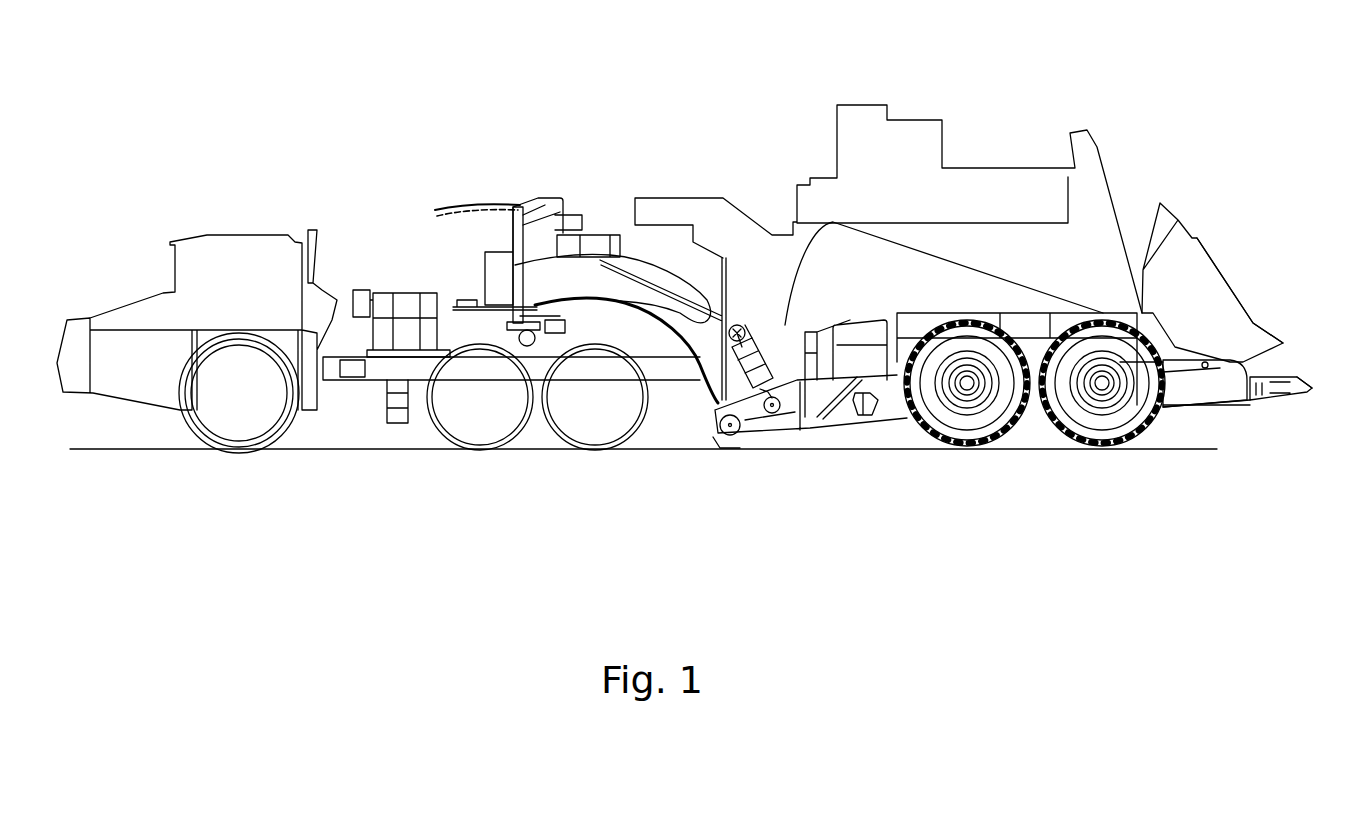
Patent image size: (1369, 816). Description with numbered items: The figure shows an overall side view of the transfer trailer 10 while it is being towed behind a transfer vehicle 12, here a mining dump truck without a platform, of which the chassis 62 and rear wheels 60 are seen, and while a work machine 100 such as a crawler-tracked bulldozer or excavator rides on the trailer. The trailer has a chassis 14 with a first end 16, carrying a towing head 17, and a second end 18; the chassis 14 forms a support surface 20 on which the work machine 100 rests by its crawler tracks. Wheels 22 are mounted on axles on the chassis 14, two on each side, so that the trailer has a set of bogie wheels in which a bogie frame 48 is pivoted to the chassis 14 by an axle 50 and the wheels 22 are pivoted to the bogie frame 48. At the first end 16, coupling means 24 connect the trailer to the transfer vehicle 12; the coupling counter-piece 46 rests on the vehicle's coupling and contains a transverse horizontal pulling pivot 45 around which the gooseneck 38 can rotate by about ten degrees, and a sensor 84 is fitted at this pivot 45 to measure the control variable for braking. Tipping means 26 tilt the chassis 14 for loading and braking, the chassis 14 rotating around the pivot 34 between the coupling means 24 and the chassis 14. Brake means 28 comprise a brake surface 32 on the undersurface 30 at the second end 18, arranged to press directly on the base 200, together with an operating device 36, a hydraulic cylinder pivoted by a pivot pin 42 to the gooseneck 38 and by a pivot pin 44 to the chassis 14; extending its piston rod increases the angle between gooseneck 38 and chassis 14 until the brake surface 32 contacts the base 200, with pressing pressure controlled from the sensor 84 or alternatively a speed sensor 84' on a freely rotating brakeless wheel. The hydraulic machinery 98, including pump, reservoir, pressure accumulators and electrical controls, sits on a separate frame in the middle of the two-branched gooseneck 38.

The transfer trailer 10 is at (976, 233).
The transfer vehicle 12 is at (515, 458).
The chassis 14 is at (1185, 348).
The first end 16 is at (771, 471).
The towing head 17 is at (620, 246).
The second end 18 is at (1297, 410).
The support surface 20 is at (1255, 358).
The wheels 22 is at (1034, 433).
The coupling means 24 is at (527, 176).
The tipping means 26 is at (787, 320).
The brake means 28 is at (740, 462).
The undersurface 30 is at (1260, 408).
The brake surface 32 is at (730, 460).
The pivot 34 is at (720, 425).
The operating device 36 is at (738, 325).
The gooseneck 38 is at (643, 277).
The pivot pin 42 is at (773, 328).
The pivot pin 44 is at (772, 373).
The pivot 45 is at (540, 345).
The coupling counter-piece 46 is at (488, 337).
The bogie frame 48 is at (958, 455).
The axle 50 is at (1040, 453).
The rear wheels 60 is at (468, 413).
The chassis 62 is at (355, 372).
The sensor 84 is at (601, 349).
The speed sensor 84' is at (1152, 199).
The hydraulic machinery 98 is at (540, 190).
The work machine 100 is at (871, 163).
The base 200 is at (884, 483).